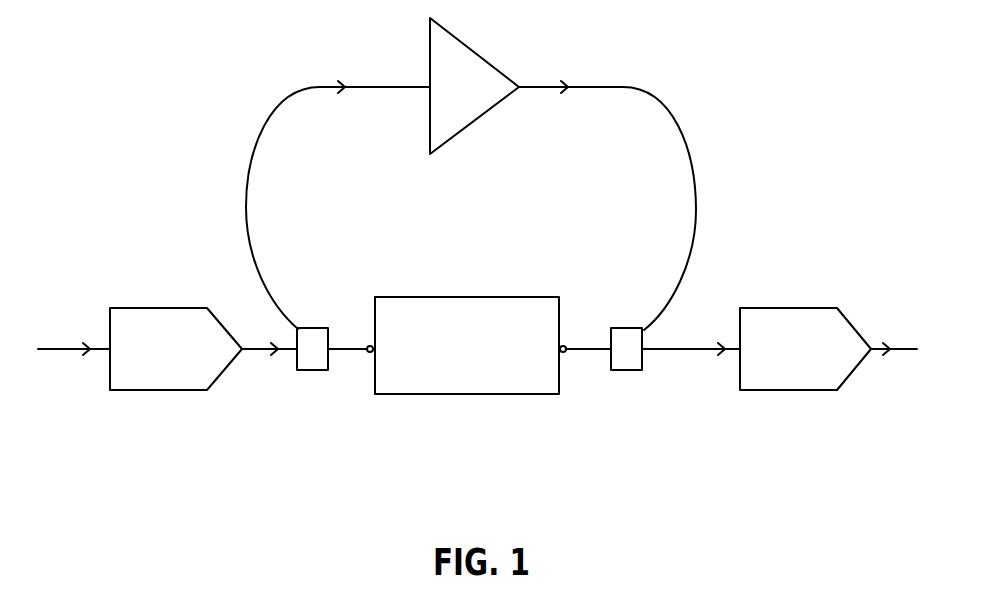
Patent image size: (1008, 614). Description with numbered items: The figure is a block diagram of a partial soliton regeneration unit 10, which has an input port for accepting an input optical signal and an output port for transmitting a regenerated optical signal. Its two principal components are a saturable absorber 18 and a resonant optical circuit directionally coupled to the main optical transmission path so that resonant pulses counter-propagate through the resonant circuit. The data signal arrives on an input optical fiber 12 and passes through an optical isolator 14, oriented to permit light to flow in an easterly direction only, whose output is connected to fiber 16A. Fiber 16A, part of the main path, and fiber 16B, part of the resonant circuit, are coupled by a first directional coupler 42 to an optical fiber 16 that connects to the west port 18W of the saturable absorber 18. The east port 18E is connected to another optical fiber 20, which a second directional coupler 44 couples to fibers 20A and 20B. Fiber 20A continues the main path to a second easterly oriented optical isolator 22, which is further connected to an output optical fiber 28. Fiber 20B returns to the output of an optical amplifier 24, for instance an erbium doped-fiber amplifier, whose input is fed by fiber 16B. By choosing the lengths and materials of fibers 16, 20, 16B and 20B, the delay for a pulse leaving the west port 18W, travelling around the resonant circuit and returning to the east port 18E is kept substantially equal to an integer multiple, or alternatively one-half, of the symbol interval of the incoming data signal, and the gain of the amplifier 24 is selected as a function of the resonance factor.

The partial soliton regeneration unit 10 is at (312, 475).
The input optical fiber 12 is at (57, 351).
The optical isolator 14 is at (178, 382).
The optical fiber 16 is at (343, 351).
The optical fiber 16A is at (250, 351).
The optical fiber 16B is at (246, 227).
The saturable absorber 18 is at (477, 384).
The west port 18W is at (368, 346).
The east port 18E is at (566, 346).
The optical fiber 20 is at (585, 351).
The optical fiber 20A is at (690, 351).
The optical fiber 20B is at (696, 228).
The optical isolator 22 is at (808, 381).
The optical amplifier 24 is at (470, 111).
The output optical fiber 28 is at (898, 351).
The first directional coupler 42 is at (315, 371).
The second directional coupler 44 is at (628, 371).